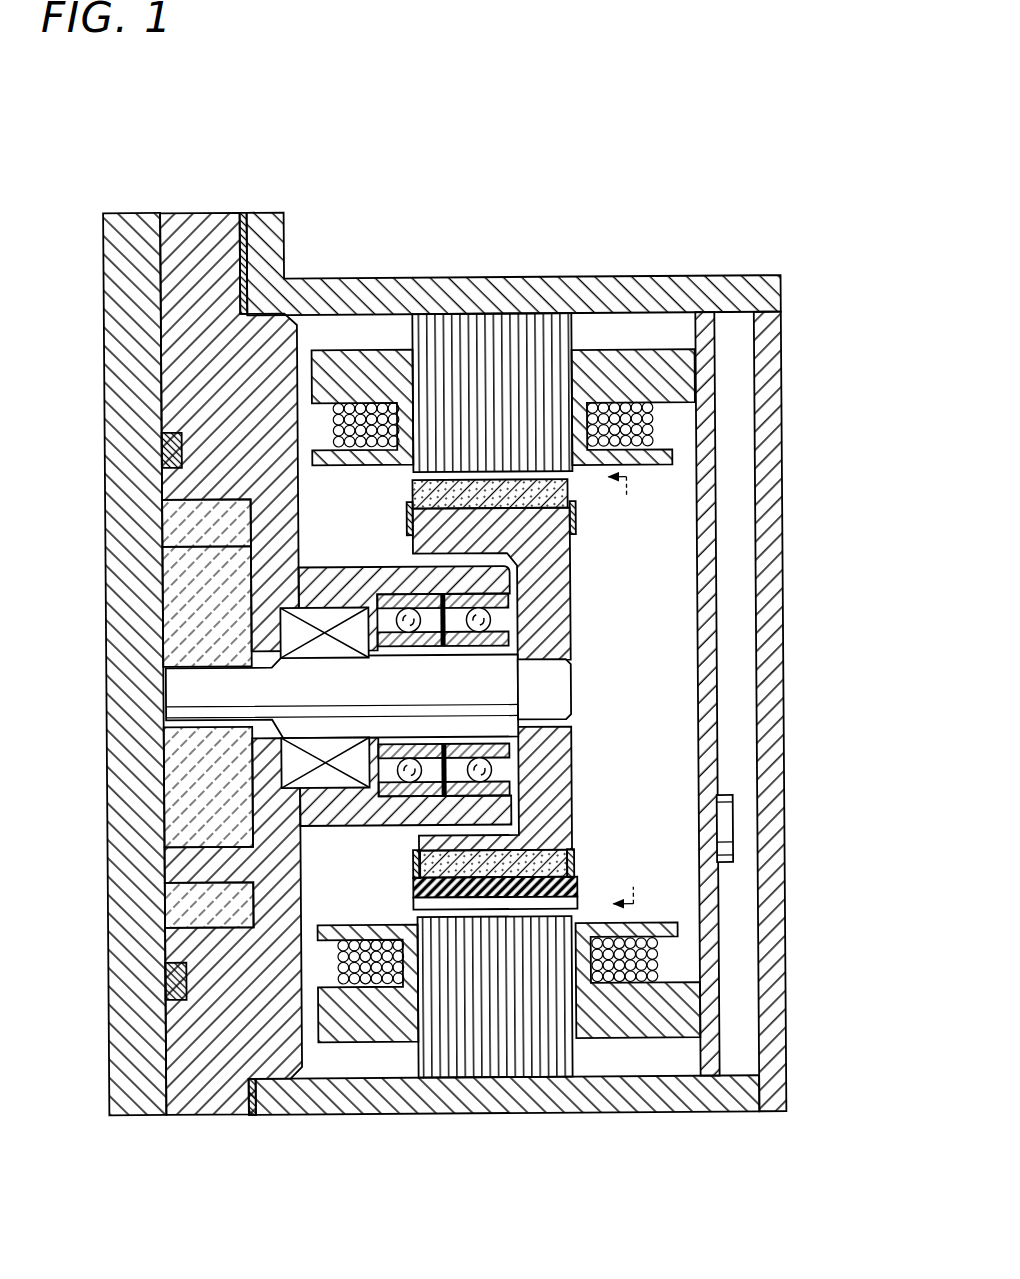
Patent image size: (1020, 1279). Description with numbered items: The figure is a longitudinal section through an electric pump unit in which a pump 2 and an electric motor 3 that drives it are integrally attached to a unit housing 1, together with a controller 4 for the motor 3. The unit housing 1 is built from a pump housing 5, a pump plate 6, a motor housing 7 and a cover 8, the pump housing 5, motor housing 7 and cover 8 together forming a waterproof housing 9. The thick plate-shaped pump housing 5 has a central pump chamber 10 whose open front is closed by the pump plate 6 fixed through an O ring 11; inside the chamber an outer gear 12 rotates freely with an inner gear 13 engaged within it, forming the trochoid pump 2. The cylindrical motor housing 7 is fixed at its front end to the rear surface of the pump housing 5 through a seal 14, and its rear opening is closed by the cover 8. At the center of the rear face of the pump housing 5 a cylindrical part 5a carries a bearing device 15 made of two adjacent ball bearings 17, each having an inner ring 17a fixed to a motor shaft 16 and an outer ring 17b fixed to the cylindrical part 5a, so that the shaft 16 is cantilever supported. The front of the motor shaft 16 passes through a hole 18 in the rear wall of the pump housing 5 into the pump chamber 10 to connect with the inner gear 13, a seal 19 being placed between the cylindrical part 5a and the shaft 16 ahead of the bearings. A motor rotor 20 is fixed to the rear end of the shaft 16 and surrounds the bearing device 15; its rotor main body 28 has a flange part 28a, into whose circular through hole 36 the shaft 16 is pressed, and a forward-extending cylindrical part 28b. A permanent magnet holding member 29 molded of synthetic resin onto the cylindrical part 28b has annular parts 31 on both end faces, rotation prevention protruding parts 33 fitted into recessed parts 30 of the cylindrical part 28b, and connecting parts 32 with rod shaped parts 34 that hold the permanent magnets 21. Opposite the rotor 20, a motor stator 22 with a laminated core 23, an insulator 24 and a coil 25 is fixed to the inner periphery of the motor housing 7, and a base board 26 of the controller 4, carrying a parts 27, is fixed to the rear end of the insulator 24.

The unit housing 1 is at (205, 170).
The pump 2 is at (156, 912).
The electric motor 3 is at (596, 785).
The controller 4 is at (695, 658).
The pump housing 5 is at (211, 1107).
The cylindrical part 5a is at (348, 815).
The pump plate 6 is at (127, 1095).
The motor housing 7 is at (378, 1107).
The cover 8 is at (763, 530).
The waterproof housing 9 is at (580, 1191).
The pump chamber 10 is at (170, 506).
The O ring 11 is at (163, 455).
The outer gear 12 is at (170, 527).
The inner gear 13 is at (167, 593).
The seal 14 is at (243, 212).
The bearing device 15 is at (425, 592).
The motor shaft 16 is at (557, 682).
The ball bearing 17 is at (407, 798).
The inner ring 17a is at (510, 637).
The outer ring 17b is at (510, 600).
The hole 18 is at (250, 664).
The seal 19 is at (326, 777).
The motor rotor 20 is at (568, 563).
The permanent magnet 21 is at (516, 481).
The motor stator 22 is at (512, 318).
The core 23 is at (481, 1074).
The insulator 24 is at (638, 1034).
The coil 25 is at (650, 424).
The base board 26 is at (700, 532).
The parts 27 is at (722, 822).
The rotor main body 28 is at (570, 808).
The flange part 28a is at (570, 749).
The cylindrical part 28b is at (414, 530).
The permanent magnet holding member 29 is at (577, 886).
The rotation prevention recessed part 30 is at (574, 868).
The annular part 31 is at (408, 510).
The connecting part 32 is at (493, 862).
The rotation prevention protruding part 33 is at (494, 855).
The rod shaped part 34 is at (513, 900).
The circular through hole 36 is at (566, 713).